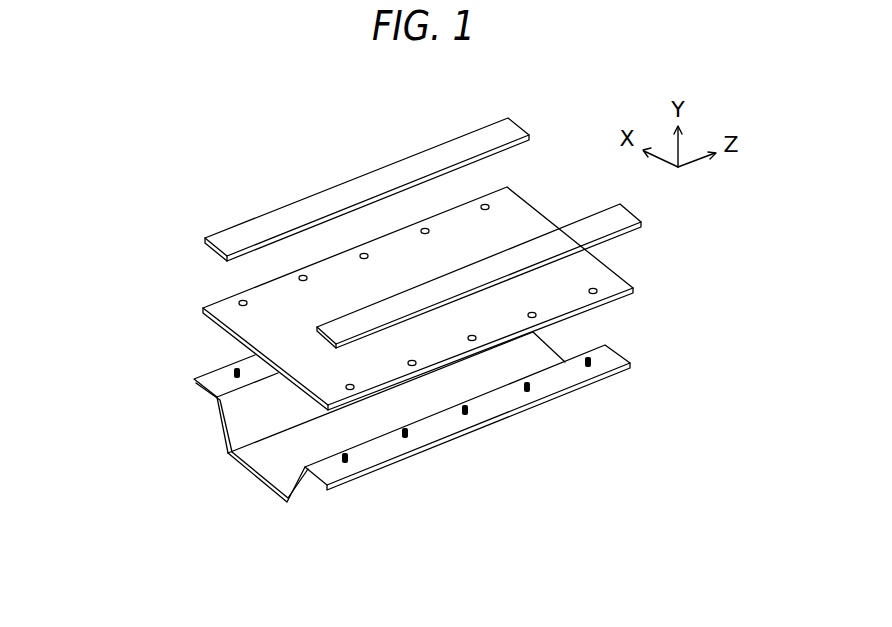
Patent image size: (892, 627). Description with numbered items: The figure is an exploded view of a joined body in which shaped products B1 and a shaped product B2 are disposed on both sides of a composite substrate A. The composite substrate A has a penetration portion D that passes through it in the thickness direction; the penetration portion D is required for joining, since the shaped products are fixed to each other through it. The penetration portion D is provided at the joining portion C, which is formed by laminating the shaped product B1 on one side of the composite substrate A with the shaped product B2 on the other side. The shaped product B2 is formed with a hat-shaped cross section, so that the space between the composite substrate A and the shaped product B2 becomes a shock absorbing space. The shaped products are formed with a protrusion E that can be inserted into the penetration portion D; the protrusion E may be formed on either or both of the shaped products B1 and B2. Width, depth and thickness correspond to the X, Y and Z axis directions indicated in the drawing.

The composite substrate A is at (238, 333).
The shaped product B1 is at (343, 327).
The shaped product B2 is at (247, 472).
The joining portion C is at (422, 435).
The penetration portion D is at (602, 297).
The protrusion E is at (592, 367).